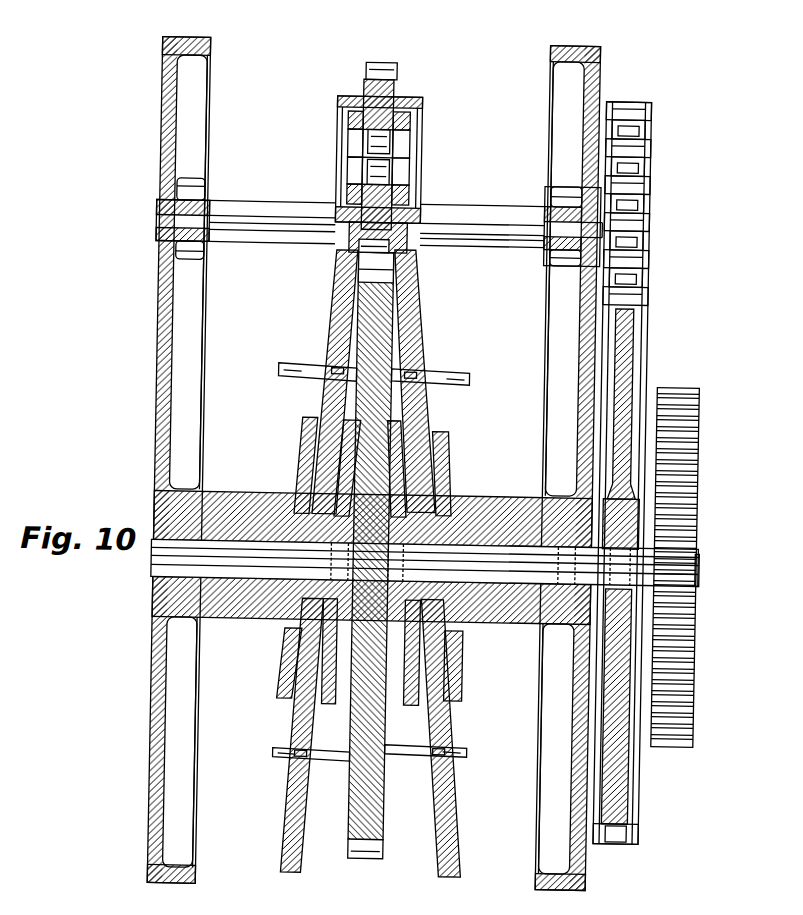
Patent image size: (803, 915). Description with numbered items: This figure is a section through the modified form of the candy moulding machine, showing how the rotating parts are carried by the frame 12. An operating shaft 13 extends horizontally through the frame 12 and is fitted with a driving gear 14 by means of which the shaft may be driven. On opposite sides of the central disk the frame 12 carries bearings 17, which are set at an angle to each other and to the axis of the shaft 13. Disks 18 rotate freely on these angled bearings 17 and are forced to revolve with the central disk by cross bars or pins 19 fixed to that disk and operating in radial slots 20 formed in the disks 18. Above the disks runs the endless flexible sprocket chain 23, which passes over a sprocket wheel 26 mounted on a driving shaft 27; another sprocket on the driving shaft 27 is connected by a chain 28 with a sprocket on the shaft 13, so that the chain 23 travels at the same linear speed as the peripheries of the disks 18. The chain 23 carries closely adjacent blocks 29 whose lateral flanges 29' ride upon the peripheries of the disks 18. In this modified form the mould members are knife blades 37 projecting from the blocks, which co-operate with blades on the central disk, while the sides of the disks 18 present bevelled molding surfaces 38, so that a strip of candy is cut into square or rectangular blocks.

The frame 12 is at (153, 736).
The operating shaft 13 is at (165, 548).
The driving gear 14 is at (687, 464).
The bearings 17 is at (452, 497).
The disks 18 is at (335, 295).
The cross bars or pins 19 is at (284, 373).
The radial slots 20 is at (415, 362).
The endless flexible sprocket chain 23 is at (398, 140).
The sprocket wheel 26 is at (373, 172).
The driving shaft 27 is at (446, 211).
The chain 28 is at (640, 132).
The blocks 29 is at (397, 144).
The lateral flanges 29' is at (390, 157).
The knife blades 37 is at (376, 64).
The bevelled molding surfaces 38 is at (307, 857).